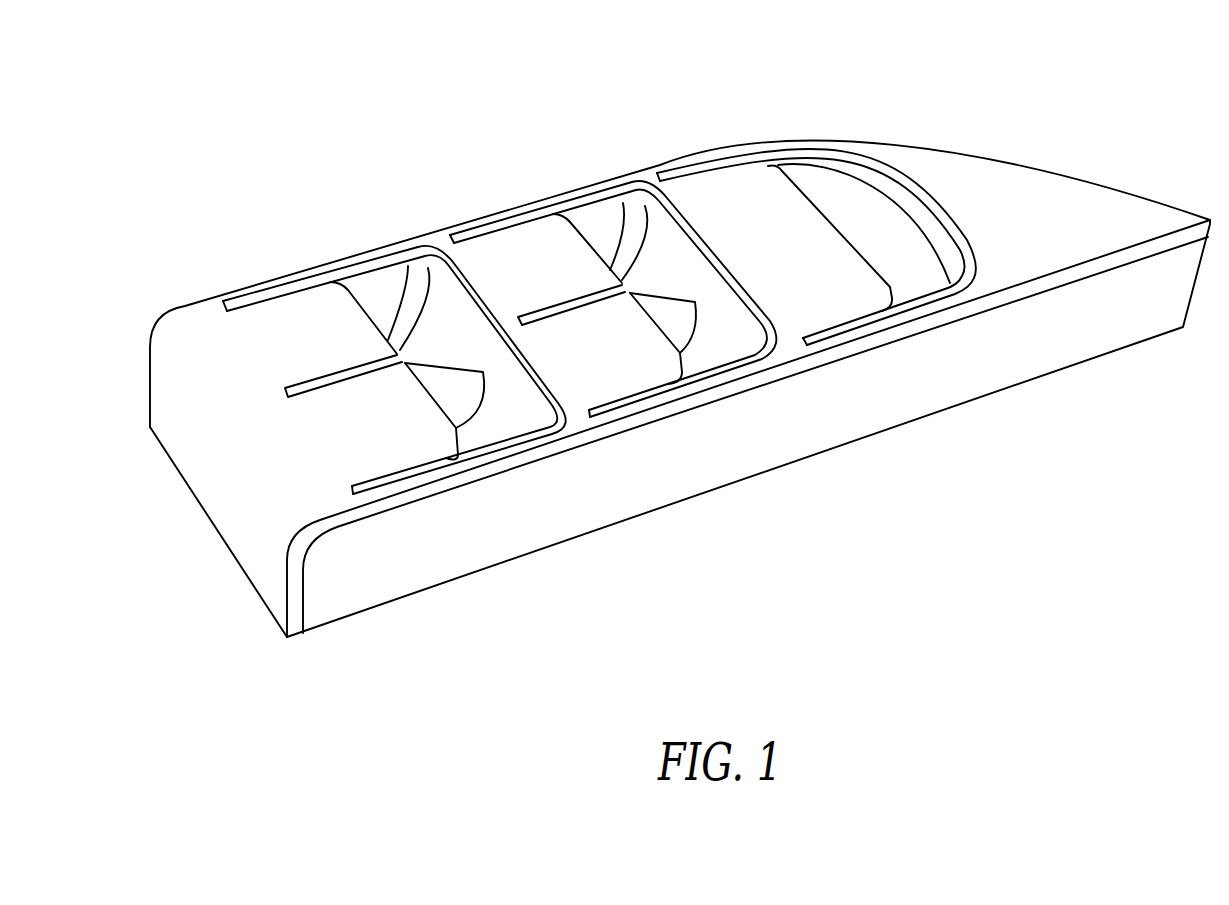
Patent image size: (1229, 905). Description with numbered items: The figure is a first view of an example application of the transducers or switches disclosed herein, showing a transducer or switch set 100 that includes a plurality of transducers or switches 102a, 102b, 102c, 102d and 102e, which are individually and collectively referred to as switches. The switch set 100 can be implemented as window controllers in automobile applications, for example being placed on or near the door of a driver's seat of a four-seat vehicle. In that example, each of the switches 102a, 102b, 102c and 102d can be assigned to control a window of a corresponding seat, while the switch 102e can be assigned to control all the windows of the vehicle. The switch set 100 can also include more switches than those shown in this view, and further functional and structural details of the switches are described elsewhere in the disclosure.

The switch set 100 is at (1120, 76).
The switch 102a is at (282, 307).
The switch 102b is at (385, 391).
The switch 102c is at (508, 238).
The switch 102d is at (607, 315).
The switch 102e is at (787, 240).